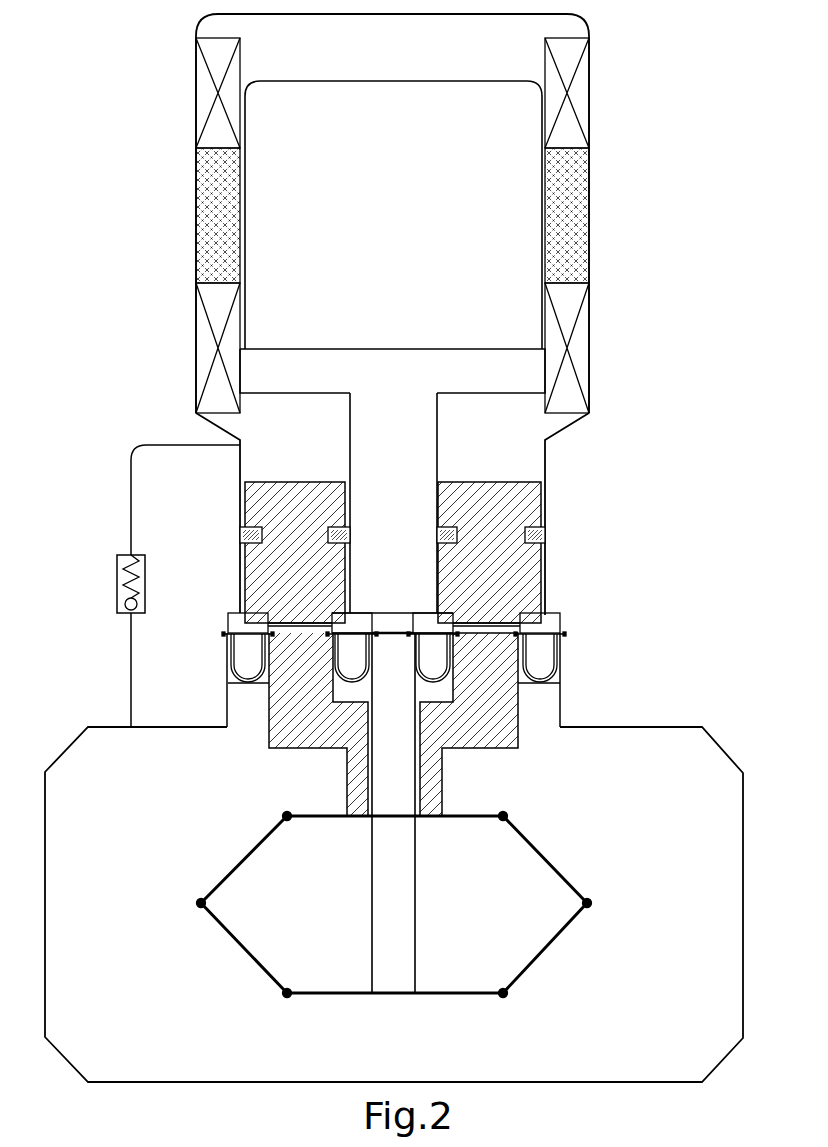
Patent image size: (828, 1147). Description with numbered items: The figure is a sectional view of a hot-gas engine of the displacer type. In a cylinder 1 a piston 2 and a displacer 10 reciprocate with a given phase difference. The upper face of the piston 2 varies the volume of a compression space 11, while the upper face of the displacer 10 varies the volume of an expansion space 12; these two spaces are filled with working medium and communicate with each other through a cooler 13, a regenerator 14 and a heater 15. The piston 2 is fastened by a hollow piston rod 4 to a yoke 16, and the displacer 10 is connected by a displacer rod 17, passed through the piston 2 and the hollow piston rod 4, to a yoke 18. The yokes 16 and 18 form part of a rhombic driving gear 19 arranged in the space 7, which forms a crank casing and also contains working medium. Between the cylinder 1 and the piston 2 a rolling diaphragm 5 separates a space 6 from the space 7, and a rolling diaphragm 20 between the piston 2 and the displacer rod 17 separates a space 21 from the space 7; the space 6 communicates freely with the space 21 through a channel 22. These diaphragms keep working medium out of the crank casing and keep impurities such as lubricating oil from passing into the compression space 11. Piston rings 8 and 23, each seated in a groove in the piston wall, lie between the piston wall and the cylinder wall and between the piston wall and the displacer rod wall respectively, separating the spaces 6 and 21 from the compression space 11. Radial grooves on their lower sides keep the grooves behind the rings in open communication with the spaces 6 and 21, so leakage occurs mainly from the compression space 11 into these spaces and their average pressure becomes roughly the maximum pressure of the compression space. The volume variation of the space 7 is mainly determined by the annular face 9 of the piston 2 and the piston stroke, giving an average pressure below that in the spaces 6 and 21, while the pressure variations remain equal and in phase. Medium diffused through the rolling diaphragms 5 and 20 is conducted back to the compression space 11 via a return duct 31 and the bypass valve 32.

The cylinder 1 is at (548, 455).
The piston 2 is at (528, 500).
The hollow piston rod 4 is at (430, 786).
The rolling diaphragm 5 is at (547, 703).
The space 6 is at (543, 653).
The space 7 is at (674, 924).
The piston ring 8 is at (537, 537).
The annular face 9 is at (493, 748).
The displacer 10 is at (352, 242).
The compression space 11 is at (498, 460).
The expansion space 12 is at (441, 58).
The cooler 13 is at (578, 345).
The regenerator 14 is at (574, 227).
The heater 15 is at (582, 97).
The yoke 16 is at (473, 820).
The displacer rod 17 is at (395, 913).
The yoke 18 is at (447, 993).
The rhombic driving gear 19 is at (572, 865).
The rolling diaphragm 20 is at (352, 700).
The space 21 is at (267, 738).
The channel 22 is at (287, 620).
The piston ring 23 is at (335, 532).
The return duct 31 is at (131, 632).
The bypass valve 32 is at (117, 571).